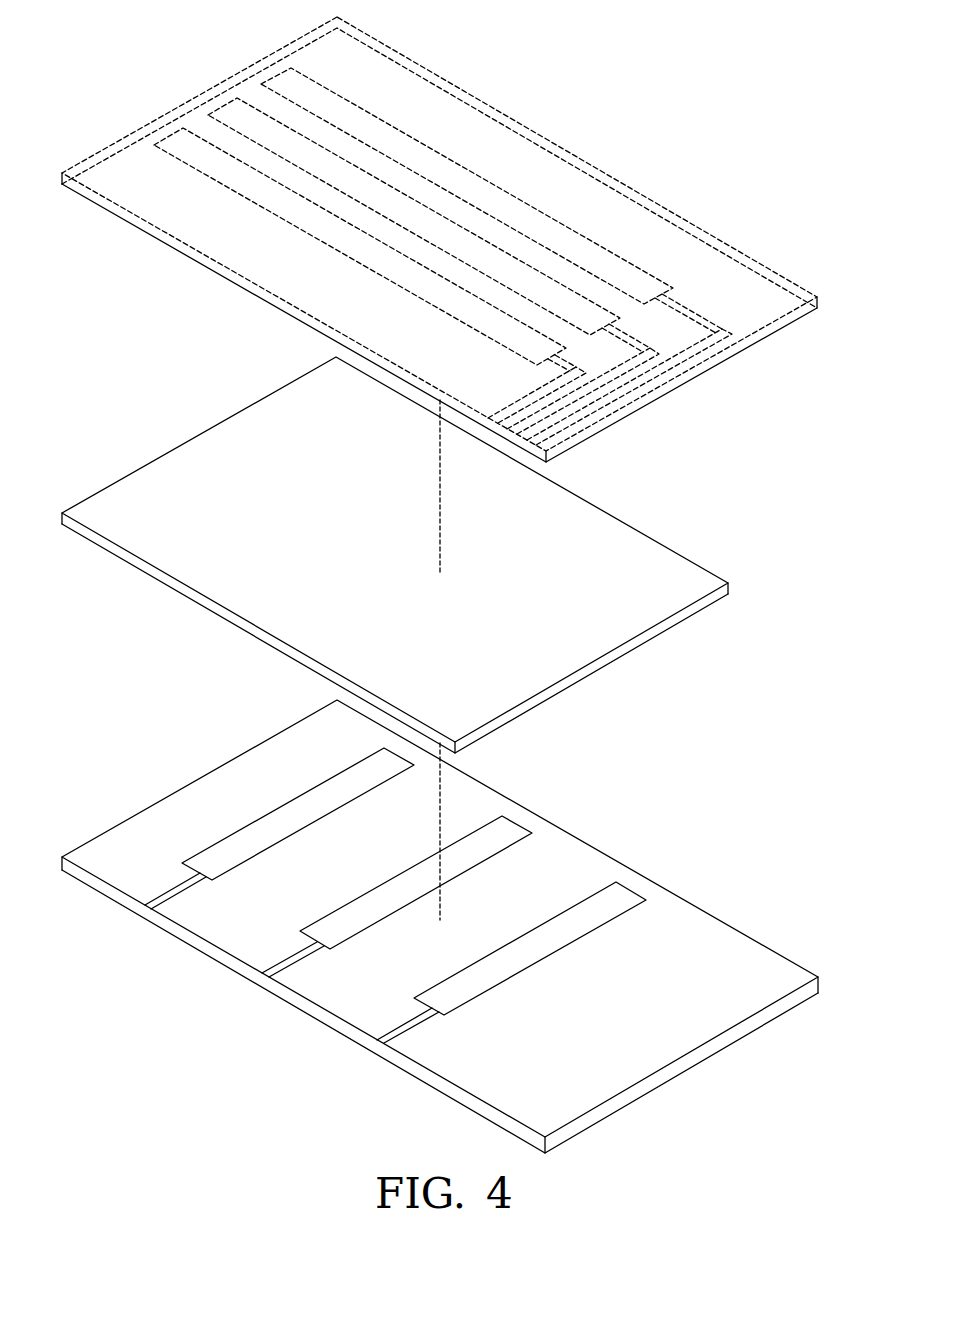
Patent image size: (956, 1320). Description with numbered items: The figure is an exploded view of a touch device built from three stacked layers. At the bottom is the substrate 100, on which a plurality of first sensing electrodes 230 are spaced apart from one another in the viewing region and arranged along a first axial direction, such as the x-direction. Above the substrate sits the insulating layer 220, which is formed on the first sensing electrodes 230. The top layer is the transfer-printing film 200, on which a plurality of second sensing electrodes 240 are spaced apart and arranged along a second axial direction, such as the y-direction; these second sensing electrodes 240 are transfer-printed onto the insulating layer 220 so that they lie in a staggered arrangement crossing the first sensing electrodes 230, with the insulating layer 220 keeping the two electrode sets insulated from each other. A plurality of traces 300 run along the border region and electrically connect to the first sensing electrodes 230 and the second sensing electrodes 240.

The substrate 100 is at (720, 945).
The transfer-printing film 200 is at (693, 240).
The insulating layer 220 is at (640, 550).
The first sensing electrodes 230 is at (620, 900).
The second sensing electrodes 240 is at (553, 220).
The traces 300 is at (697, 300).